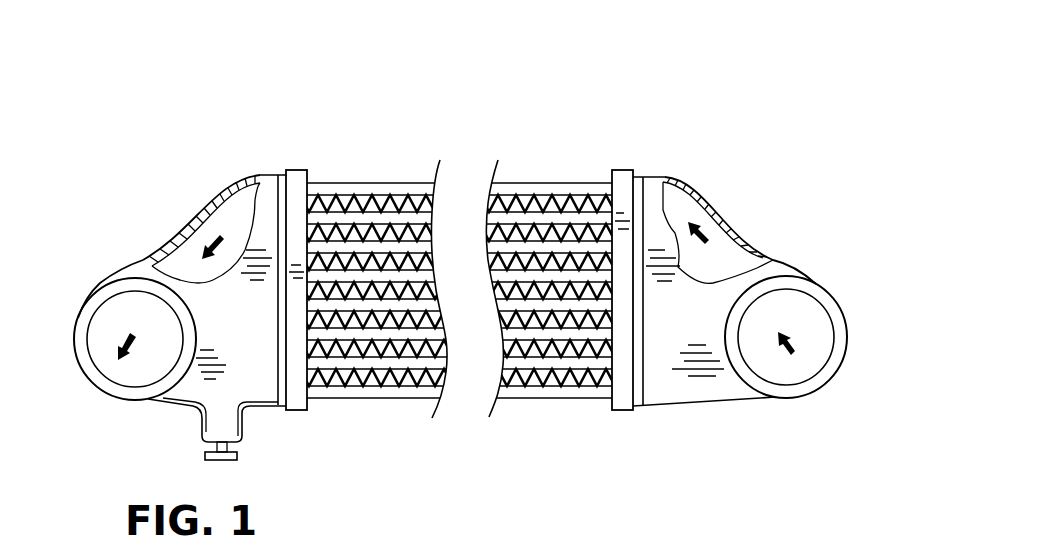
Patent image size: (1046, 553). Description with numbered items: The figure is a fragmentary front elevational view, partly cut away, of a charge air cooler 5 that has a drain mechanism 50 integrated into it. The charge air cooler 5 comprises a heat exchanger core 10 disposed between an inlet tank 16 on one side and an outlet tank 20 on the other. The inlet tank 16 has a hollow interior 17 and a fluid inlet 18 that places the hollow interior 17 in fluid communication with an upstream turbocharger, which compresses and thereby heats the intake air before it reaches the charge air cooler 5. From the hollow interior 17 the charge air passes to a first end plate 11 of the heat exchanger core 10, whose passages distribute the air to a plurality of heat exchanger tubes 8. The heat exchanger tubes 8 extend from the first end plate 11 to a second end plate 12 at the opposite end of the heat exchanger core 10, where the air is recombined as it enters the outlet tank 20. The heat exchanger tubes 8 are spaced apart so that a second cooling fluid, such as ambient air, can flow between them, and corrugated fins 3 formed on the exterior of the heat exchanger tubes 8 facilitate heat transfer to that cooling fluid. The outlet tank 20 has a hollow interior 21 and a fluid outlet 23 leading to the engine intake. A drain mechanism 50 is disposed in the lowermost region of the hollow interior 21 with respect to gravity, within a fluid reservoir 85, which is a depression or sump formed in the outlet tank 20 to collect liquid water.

The charge air cooler 5 is at (646, 91).
The corrugated fins 3 is at (375, 195).
The heat exchanger tubes 8 is at (572, 215).
The heat exchanger core 10 is at (400, 426).
The first end plate 11 is at (622, 170).
The second end plate 12 is at (295, 170).
The inlet tank 16 is at (810, 262).
The hollow interior 17 is at (732, 252).
The fluid inlet 18 is at (815, 337).
The outlet tank 20 is at (112, 265).
The hollow interior 21 is at (224, 210).
The fluid outlet 23 is at (102, 333).
The drain mechanism 50 is at (250, 465).
The fluid reservoir 85 is at (190, 439).